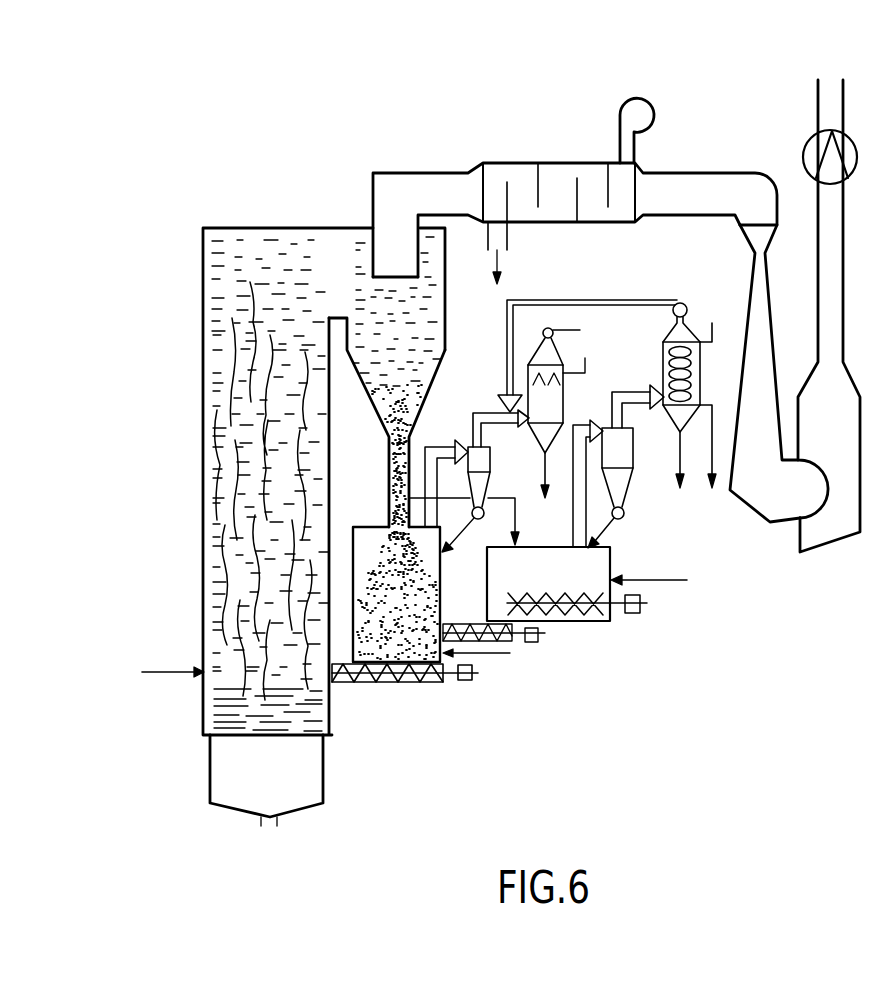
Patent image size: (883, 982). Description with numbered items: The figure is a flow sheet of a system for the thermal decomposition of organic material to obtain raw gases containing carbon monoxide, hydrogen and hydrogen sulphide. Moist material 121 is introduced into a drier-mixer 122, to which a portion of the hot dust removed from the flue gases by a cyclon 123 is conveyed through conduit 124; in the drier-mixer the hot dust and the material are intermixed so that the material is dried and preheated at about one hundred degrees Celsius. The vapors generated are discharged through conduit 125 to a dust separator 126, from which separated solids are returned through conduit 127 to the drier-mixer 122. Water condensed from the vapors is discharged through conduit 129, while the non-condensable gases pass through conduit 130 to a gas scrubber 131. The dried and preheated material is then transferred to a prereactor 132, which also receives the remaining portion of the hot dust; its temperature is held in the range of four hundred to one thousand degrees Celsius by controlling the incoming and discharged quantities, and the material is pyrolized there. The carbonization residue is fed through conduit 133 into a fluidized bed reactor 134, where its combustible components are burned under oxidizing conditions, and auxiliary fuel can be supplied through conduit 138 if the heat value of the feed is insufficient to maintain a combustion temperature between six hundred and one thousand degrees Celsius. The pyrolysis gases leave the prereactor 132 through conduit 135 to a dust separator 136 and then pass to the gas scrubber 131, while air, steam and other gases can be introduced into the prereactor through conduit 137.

The moist material 121 is at (660, 582).
The drier-mixer 122 is at (570, 578).
The cyclon 123 is at (446, 310).
The conduit 124 is at (497, 500).
The conduit 125 is at (577, 427).
The dust separator 126 is at (615, 488).
The conduit 127 is at (600, 533).
The conduit 129 is at (690, 463).
The conduit 130 is at (607, 300).
The gas scrubber 131 is at (545, 360).
The prereactor 132 is at (421, 654).
The conduit 133 is at (372, 677).
The fluidized bed reactor 134 is at (222, 560).
The conduit 135 is at (438, 446).
The dust separator 136 is at (485, 453).
The conduit 137 is at (510, 653).
The conduit 138 is at (160, 670).